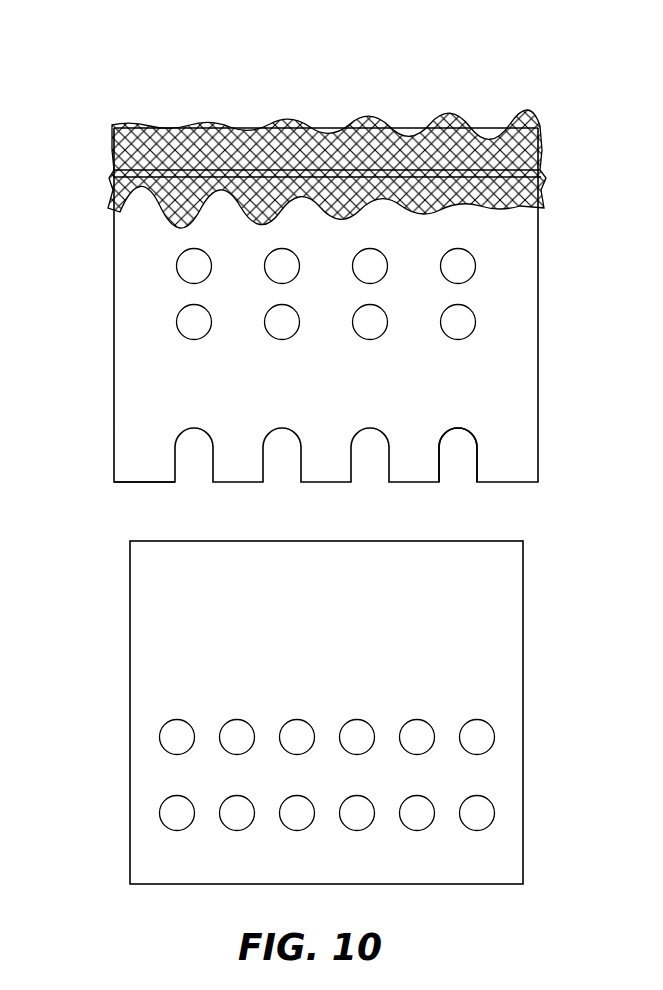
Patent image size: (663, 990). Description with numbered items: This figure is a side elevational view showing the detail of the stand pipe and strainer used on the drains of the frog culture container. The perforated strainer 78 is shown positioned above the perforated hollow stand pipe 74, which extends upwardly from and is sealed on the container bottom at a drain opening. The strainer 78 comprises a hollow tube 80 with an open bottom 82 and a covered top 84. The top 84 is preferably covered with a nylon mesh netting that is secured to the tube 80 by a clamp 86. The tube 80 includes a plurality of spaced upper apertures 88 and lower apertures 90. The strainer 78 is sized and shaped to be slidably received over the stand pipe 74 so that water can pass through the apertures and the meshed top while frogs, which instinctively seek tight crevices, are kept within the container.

The perforated hollow stand pipe 74 is at (100, 619).
The perforated strainer 78 is at (94, 95).
The hollow tube 80 is at (503, 388).
The open bottom 82 is at (163, 483).
The covered top 84 is at (478, 126).
The clamp 86 is at (110, 147).
The upper apertures 88 is at (477, 262).
The lower apertures 90 is at (461, 475).